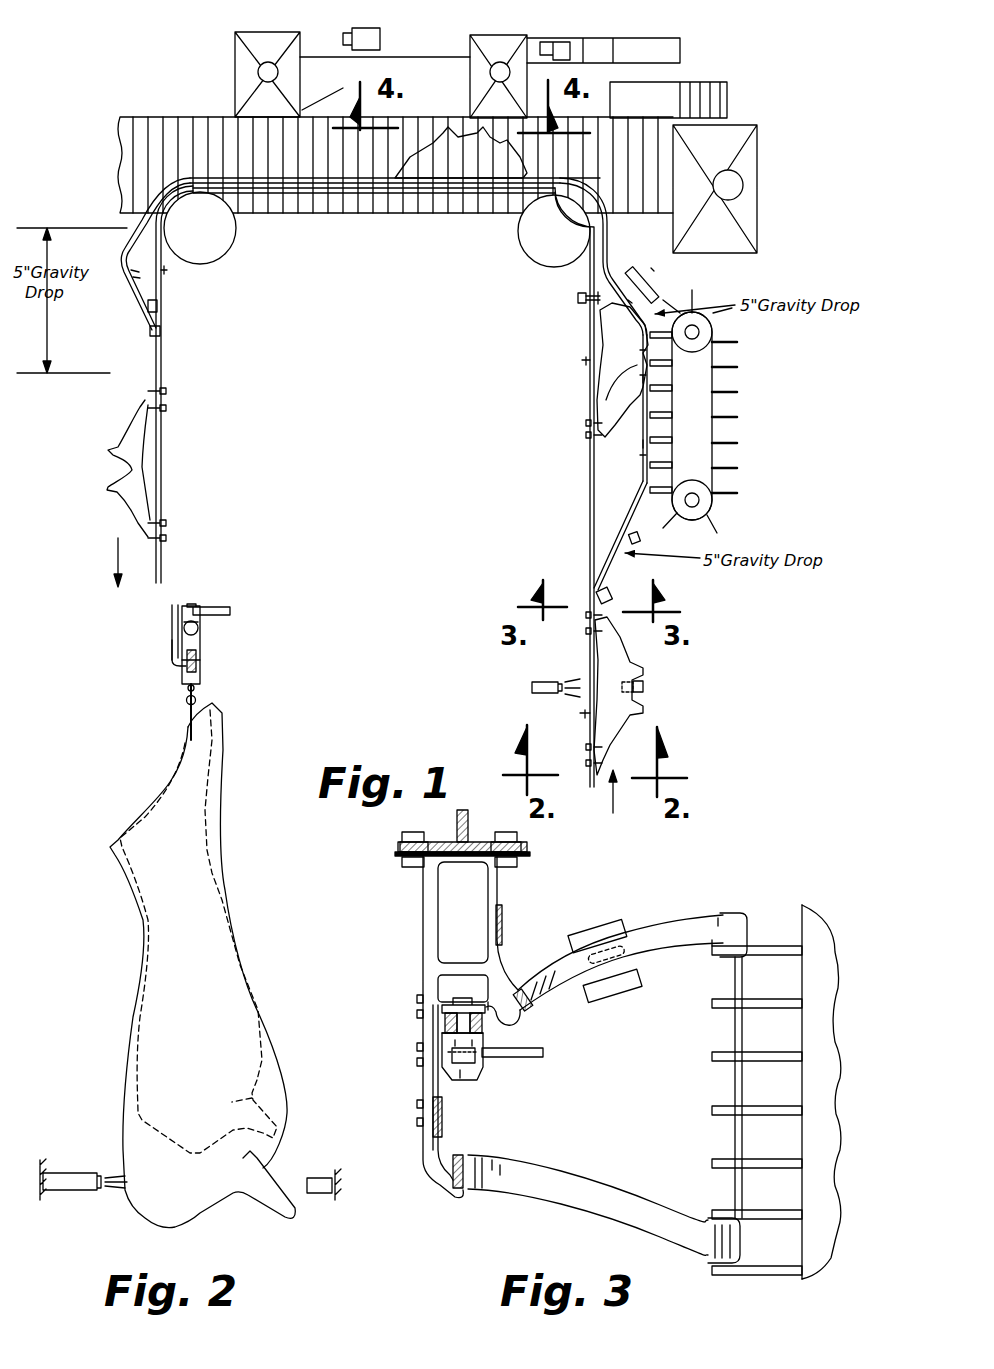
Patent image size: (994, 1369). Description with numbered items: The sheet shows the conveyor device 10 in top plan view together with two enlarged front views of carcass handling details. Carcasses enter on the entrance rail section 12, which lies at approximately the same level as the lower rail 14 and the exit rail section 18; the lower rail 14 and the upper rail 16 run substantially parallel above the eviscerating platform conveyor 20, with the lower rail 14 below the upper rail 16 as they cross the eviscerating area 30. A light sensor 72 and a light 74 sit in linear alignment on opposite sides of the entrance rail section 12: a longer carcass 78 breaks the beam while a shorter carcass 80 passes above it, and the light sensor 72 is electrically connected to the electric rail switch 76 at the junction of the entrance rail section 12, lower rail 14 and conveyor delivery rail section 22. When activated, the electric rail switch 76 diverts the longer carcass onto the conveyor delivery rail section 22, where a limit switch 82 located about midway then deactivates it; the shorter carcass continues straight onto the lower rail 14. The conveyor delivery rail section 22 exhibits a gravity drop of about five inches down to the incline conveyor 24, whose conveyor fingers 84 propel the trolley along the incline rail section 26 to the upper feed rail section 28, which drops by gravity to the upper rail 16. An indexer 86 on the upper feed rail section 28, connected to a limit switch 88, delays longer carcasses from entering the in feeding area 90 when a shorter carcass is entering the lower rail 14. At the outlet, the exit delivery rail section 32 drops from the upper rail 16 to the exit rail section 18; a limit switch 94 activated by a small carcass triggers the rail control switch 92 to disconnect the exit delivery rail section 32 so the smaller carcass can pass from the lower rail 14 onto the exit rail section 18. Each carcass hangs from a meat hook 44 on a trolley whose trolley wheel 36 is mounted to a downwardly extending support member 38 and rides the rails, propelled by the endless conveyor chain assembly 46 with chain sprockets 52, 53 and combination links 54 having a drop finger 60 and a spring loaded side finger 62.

In FIG. 1, the conveyor device 10 is at (808, 140).
In FIG. 1, the entrance rail section 12 is at (587, 786).
In FIG. 1, the lower rail 14 is at (341, 198).
In FIG. 2, the lower rail 14 is at (180, 660).
In FIG. 3, the lower rail 14 is at (426, 1160).
In FIG. 1, the upper rail 16 is at (185, 177).
In FIG. 1, the exit rail section 18 is at (162, 379).
In FIG. 1, the eviscerating platform conveyor 20 is at (128, 147).
In FIG. 1, the conveyor delivery rail section 22 is at (630, 520).
In FIG. 3, the conveyor delivery rail section 22 is at (580, 1205).
In FIG. 1, the incline conveyor 24 is at (747, 446).
In FIG. 1, the incline rail section 26 is at (647, 432).
In FIG. 3, the incline rail section 26 is at (735, 1085).
In FIG. 1, the upper feed rail section 28 is at (612, 258).
In FIG. 3, the upper feed rail section 28 is at (722, 915).
In FIG. 1, the eviscerating area 30 is at (405, 133).
In FIG. 1, the exit delivery rail section 32 is at (122, 253).
In FIG. 2, the trolley wheel 36 is at (200, 631).
In FIG. 2, the support member 38 is at (201, 667).
In FIG. 2, the meat hook 44 is at (188, 716).
In FIG. 3, the endless conveyor chain assembly 46 is at (492, 1082).
In FIG. 1, the chain sprocket 52 is at (210, 243).
In FIG. 1, the sprocket wheel 53 is at (564, 246).
In FIG. 2, the combination link 54 is at (182, 618).
In FIG. 3, the combination link 54 is at (485, 1063).
In FIG. 3, the drop finger 60 is at (463, 1078).
In FIG. 2, the side finger 62 is at (231, 609).
In FIG. 3, the side finger 62 is at (545, 1053).
In FIG. 1, the light sensor 72 is at (645, 686).
In FIG. 2, the light sensor 72 is at (322, 1178).
In FIG. 1, the light 74 is at (540, 688).
In FIG. 2, the light 74 is at (73, 1173).
In FIG. 1, the electric rail switch 76 is at (618, 600).
In FIG. 1, the longer carcass 78 is at (476, 171).
In FIG. 2, the longer carcass 78 is at (280, 1055).
In FIG. 1, the shorter carcass 80 is at (639, 379).
In FIG. 2, the shorter carcass 80 is at (262, 1080).
In FIG. 1, the limit switch 82 is at (641, 532).
In FIG. 3, the conveyor finger 84 is at (782, 1052).
In FIG. 1, the indexer 86 is at (630, 271).
In FIG. 3, the indexer 86 is at (582, 935).
In FIG. 1, the limit switch 88 is at (574, 297).
In FIG. 1, the in feeding area 90 is at (614, 221).
In FIG. 1, the rail control switch 92 is at (147, 331).
In FIG. 1, the limit switch 94 is at (147, 304).